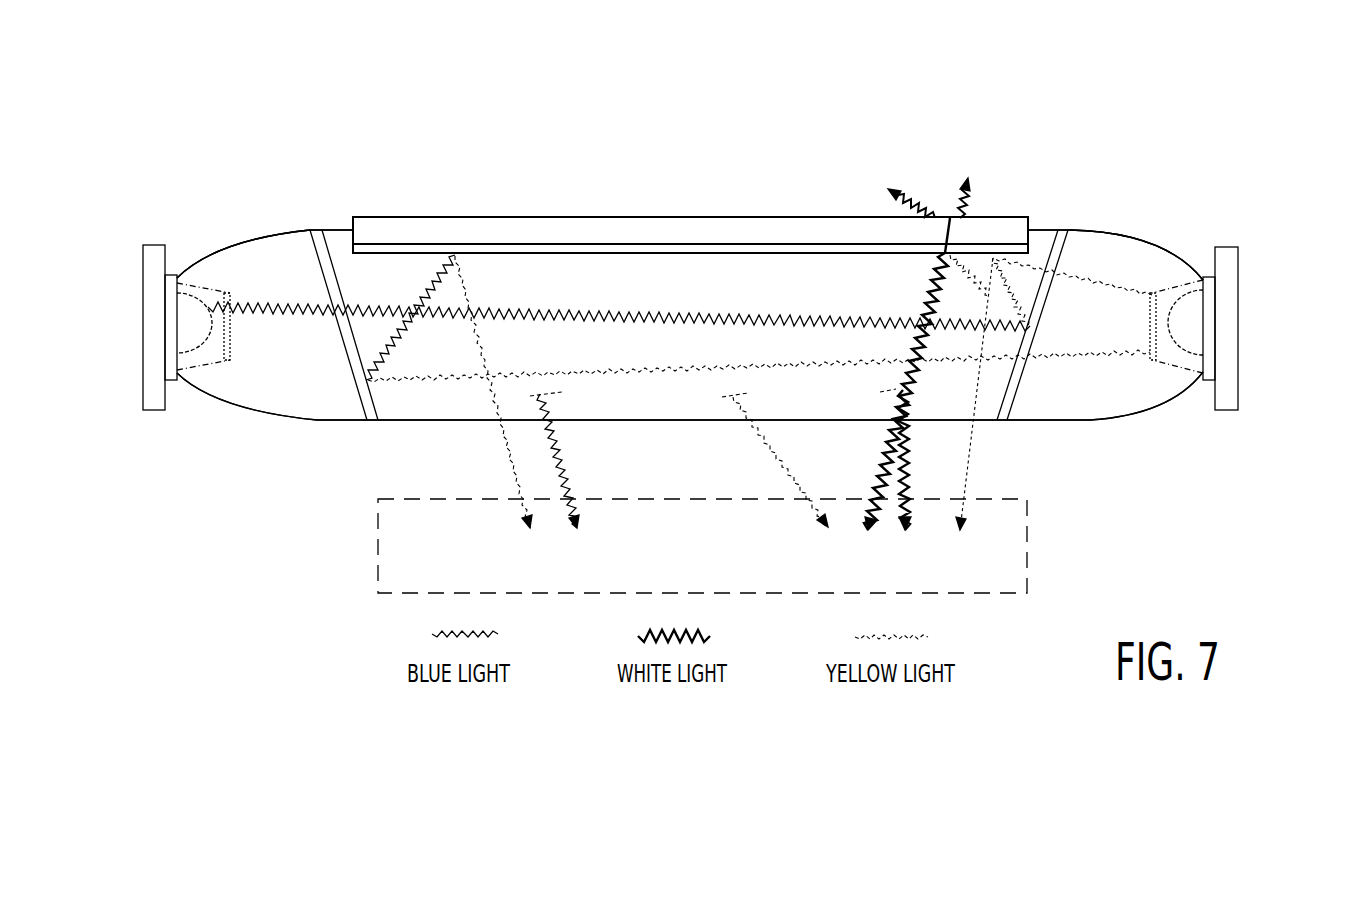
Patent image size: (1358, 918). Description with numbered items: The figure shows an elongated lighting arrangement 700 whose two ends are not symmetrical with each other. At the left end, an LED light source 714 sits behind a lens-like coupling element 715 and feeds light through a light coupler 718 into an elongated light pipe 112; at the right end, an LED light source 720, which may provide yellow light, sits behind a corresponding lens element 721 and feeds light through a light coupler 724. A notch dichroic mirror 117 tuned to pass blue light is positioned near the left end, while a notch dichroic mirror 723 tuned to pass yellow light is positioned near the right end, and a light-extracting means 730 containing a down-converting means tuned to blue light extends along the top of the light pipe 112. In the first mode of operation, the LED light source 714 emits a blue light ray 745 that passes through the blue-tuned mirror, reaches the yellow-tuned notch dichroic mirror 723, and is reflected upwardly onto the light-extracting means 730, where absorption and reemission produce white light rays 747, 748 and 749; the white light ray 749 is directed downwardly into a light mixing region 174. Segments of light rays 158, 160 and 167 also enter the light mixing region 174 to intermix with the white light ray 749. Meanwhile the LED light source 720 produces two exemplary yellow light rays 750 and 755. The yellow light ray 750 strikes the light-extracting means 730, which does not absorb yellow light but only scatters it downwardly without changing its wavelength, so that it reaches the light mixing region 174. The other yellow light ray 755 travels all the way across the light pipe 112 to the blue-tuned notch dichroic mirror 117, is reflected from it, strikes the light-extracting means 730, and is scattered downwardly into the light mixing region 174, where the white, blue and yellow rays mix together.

The elongated lighting arrangement 700 is at (508, 188).
The light pipe 112 is at (741, 306).
The light-extracting means 730 is at (607, 217).
The LED light source 714 is at (138, 278).
The collimating lens (blue) 715 is at (203, 365).
The light coupler 718 is at (246, 258).
The notch dichroic mirror 117 is at (283, 240).
The blue light ray 745 is at (531, 310).
The yellow light ray 755 is at (512, 462).
The light ray 160 is at (572, 468).
The light ray 158 is at (773, 452).
The light ray 167 is at (907, 480).
The white light ray 749 is at (935, 290).
The white light ray 747 is at (887, 207).
The white light ray 748 is at (973, 203).
The yellow light ray 750 is at (1128, 303).
The notch dichroic mirror 723 is at (1068, 263).
The light coupler 724 is at (1135, 268).
The LED light source 720 is at (1255, 327).
The collimating lens (yellow) 721 is at (1180, 370).
The light mixing region 174 is at (702, 546).